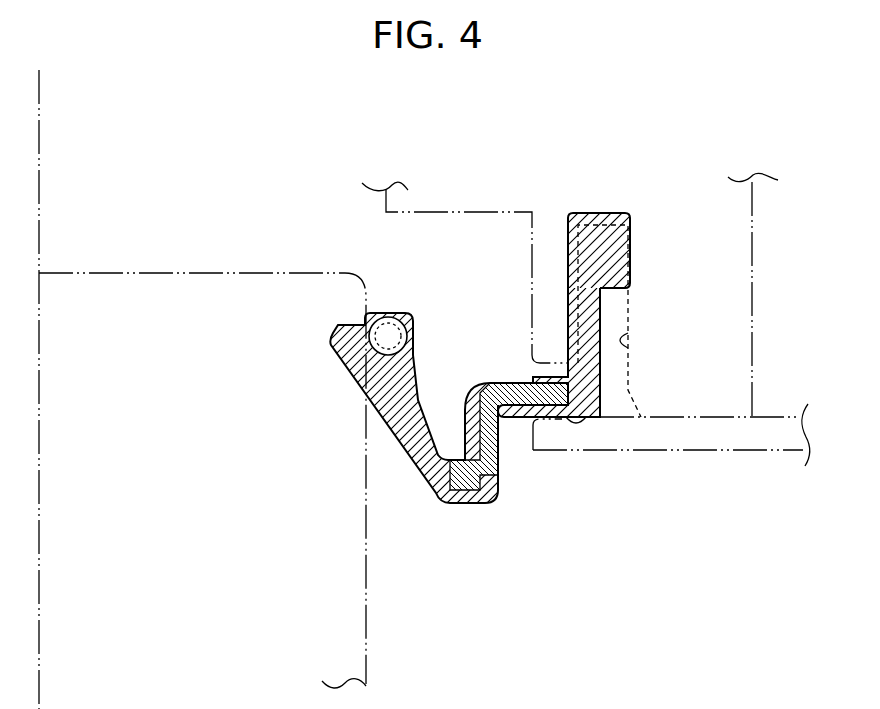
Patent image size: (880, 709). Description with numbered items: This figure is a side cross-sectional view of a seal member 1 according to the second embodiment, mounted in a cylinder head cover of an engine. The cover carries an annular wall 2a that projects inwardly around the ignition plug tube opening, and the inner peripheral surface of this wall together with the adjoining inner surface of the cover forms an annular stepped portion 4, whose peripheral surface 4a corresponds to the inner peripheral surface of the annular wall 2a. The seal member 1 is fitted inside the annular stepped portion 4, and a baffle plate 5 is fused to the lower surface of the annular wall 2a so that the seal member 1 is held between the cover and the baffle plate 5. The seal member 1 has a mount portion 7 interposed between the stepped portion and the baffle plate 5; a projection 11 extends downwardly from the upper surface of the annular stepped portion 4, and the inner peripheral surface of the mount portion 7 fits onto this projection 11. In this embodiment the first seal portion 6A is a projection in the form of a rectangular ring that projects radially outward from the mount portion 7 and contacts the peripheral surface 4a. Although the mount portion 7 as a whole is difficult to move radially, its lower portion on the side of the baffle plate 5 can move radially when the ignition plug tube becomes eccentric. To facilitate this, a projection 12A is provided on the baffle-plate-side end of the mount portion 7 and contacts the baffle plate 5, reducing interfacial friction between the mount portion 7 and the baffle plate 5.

The seal member 1 is at (465, 516).
The annular wall 2a is at (745, 274).
The annular stepped portion 4 is at (617, 383).
The peripheral surface 4a is at (630, 352).
The baffle plate 5 is at (722, 442).
The first seal portion 6A is at (608, 222).
The mount portion 7 is at (588, 314).
The projection 11 is at (540, 270).
The projection 12A is at (580, 420).